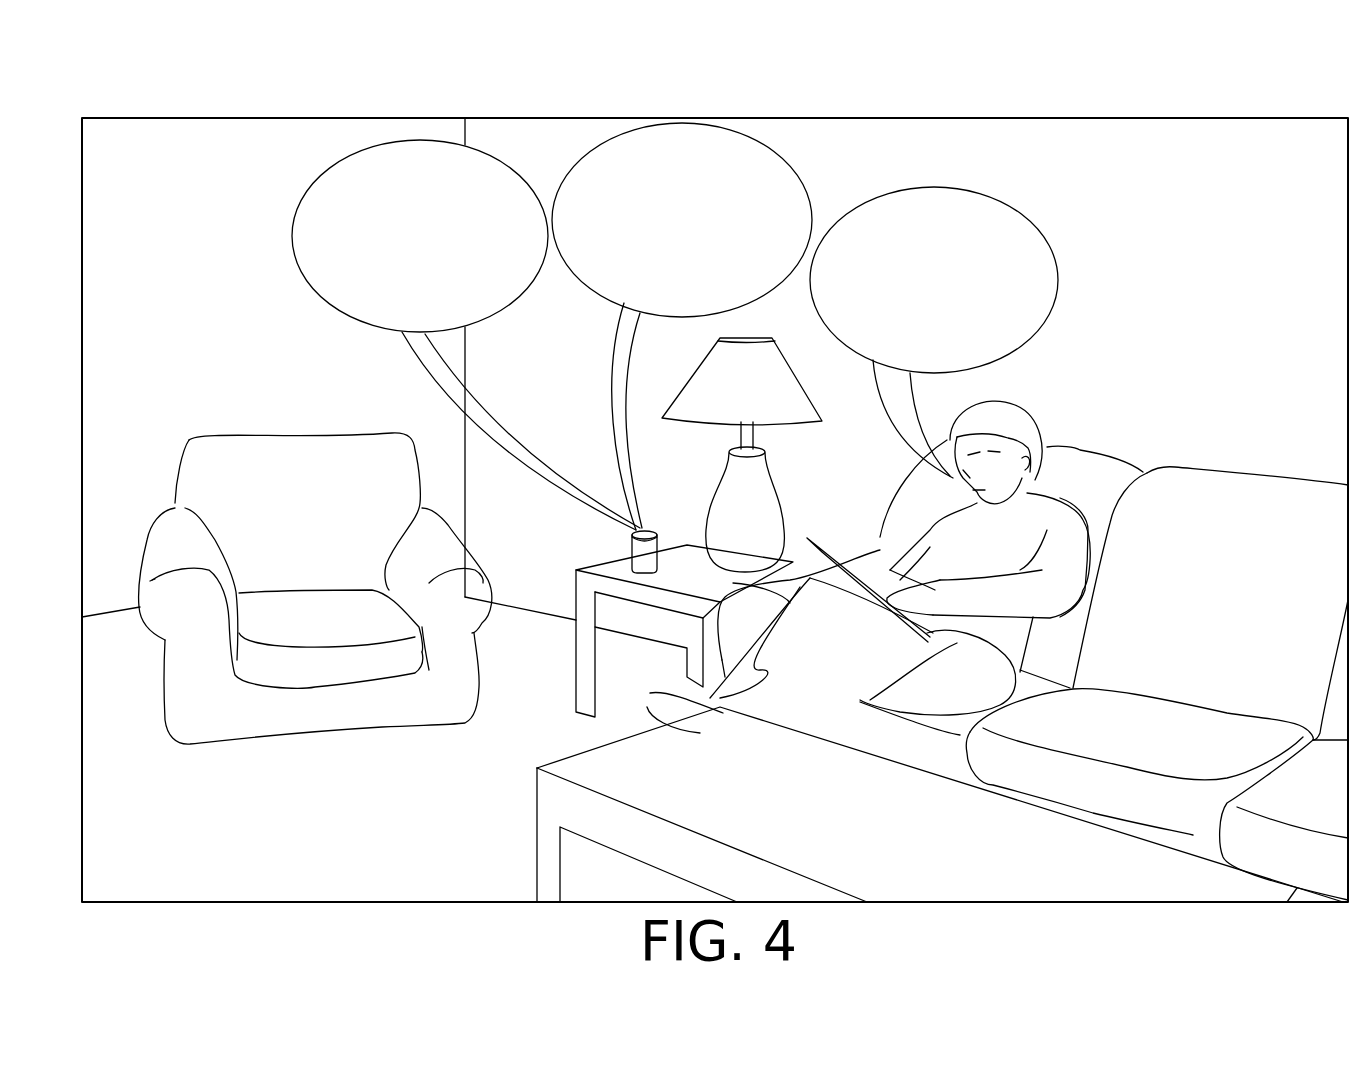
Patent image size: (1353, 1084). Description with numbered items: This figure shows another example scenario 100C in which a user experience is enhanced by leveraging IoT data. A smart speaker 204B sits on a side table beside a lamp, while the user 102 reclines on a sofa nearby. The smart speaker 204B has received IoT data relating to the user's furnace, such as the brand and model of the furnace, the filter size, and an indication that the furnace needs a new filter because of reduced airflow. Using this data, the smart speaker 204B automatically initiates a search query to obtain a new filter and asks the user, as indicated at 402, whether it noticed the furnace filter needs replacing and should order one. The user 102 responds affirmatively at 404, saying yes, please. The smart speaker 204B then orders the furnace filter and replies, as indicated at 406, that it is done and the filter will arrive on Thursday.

The example scenario 100C is at (265, 74).
The user 102 is at (1027, 405).
The smart speaker 204B is at (651, 530).
The smart speaker inquiry 402 is at (335, 167).
The user response 404 is at (1033, 216).
The smart speaker confirmation 406 is at (803, 172).